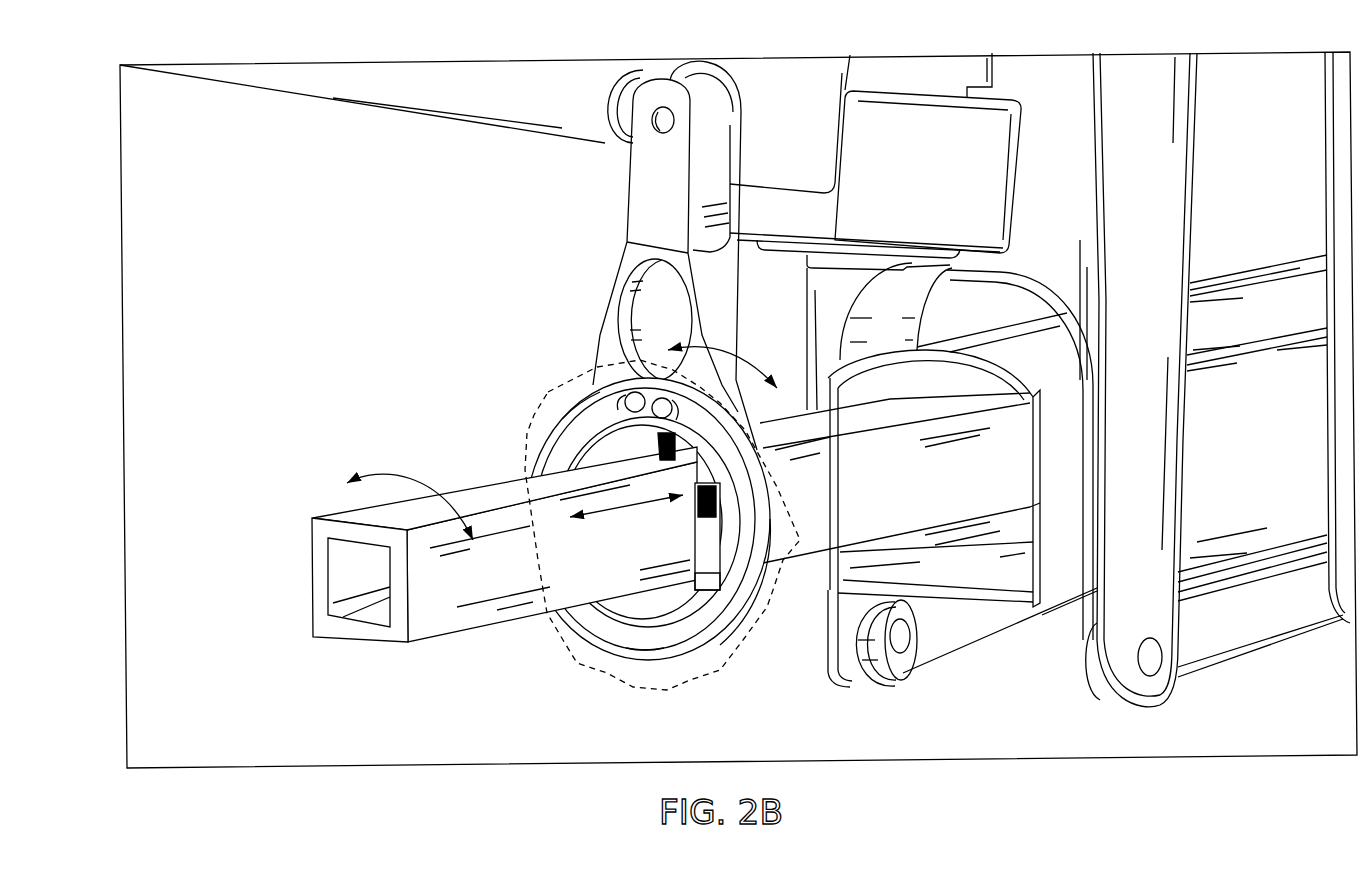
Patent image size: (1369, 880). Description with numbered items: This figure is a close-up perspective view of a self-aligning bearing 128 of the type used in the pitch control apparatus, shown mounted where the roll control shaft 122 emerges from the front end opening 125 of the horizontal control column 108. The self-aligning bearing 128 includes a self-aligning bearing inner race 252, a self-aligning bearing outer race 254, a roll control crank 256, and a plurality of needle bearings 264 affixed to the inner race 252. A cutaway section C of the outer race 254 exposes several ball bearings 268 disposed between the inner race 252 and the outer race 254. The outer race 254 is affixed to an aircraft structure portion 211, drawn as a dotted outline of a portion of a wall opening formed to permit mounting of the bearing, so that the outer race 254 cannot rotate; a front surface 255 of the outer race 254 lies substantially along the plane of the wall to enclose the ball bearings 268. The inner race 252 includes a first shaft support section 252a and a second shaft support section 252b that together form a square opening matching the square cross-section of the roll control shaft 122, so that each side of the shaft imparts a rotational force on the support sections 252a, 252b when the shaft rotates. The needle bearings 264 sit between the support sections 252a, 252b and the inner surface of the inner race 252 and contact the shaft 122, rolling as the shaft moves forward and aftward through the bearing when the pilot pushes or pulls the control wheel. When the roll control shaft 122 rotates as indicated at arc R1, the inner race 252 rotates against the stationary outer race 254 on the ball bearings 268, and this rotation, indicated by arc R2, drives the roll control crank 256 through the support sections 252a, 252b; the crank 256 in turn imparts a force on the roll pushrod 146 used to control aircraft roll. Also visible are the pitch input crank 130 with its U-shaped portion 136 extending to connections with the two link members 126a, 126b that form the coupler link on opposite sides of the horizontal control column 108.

The horizontal control column 108 is at (1248, 510).
The roll control shaft 122 is at (428, 628).
The front end opening 125 is at (990, 590).
The link member 126a is at (1235, 655).
The link member 126b is at (1047, 627).
The self-aligning bearing 128 is at (432, 316).
The pitch input crank 130 is at (1167, 172).
The U-shaped portion 136 is at (1052, 280).
The roll pushrod 146 is at (475, 92).
The aircraft structure portion 211 is at (620, 670).
The self-aligning bearing inner race 252 is at (612, 407).
The first shaft support section 252a is at (675, 607).
The second shaft support section 252b is at (613, 442).
The self-aligning bearing outer race 254 is at (754, 586).
The front surface 255 is at (642, 650).
The roll control crank 256 is at (657, 183).
The needle bearings 264 is at (733, 455).
The ball bearings 268 is at (600, 380).
The cutaway section C is at (595, 377).
The arc R1 is at (410, 495).
The arc R2 is at (722, 361).